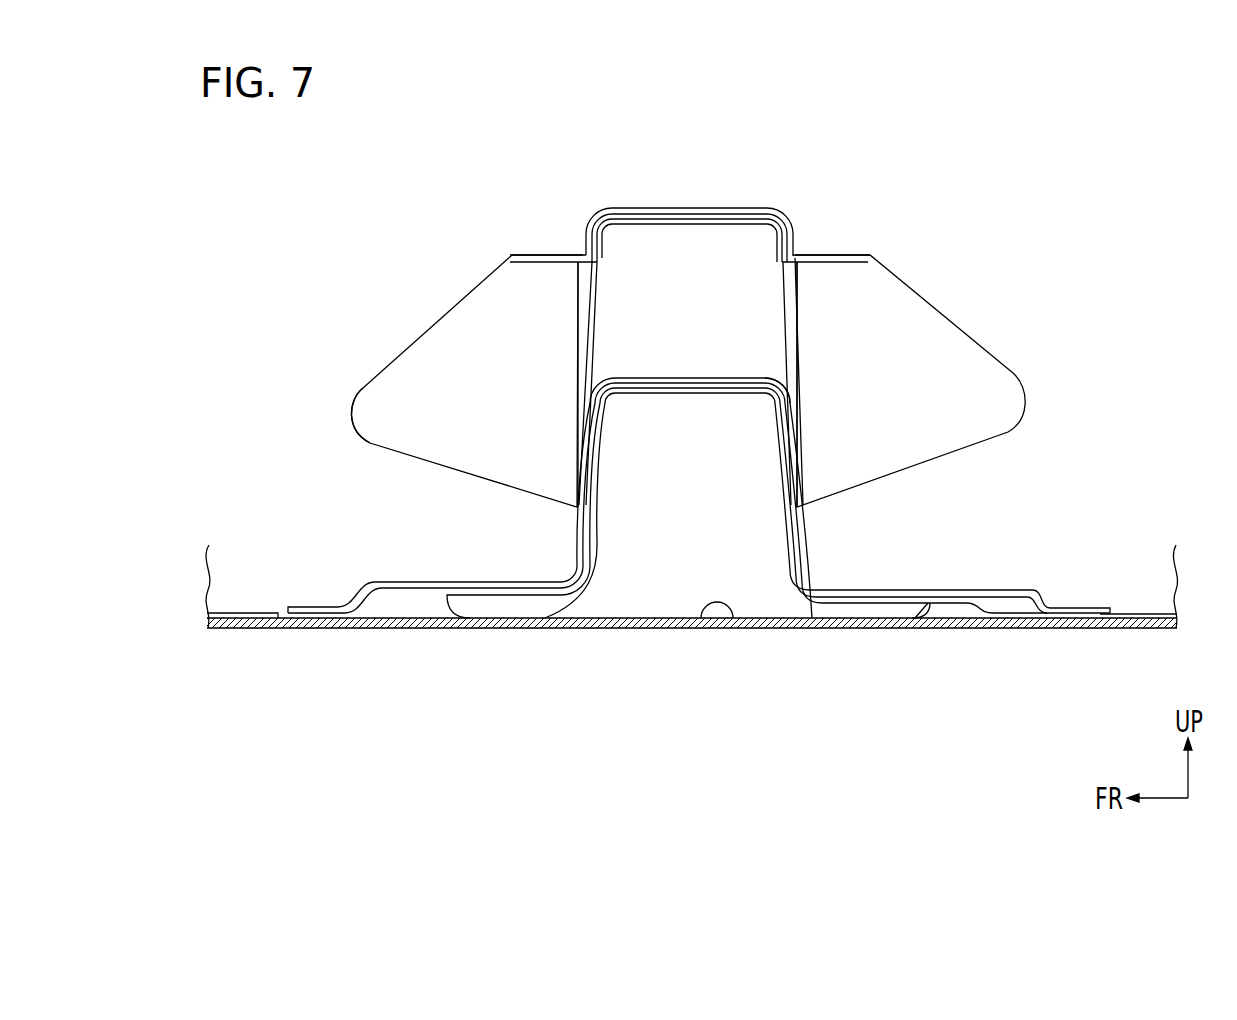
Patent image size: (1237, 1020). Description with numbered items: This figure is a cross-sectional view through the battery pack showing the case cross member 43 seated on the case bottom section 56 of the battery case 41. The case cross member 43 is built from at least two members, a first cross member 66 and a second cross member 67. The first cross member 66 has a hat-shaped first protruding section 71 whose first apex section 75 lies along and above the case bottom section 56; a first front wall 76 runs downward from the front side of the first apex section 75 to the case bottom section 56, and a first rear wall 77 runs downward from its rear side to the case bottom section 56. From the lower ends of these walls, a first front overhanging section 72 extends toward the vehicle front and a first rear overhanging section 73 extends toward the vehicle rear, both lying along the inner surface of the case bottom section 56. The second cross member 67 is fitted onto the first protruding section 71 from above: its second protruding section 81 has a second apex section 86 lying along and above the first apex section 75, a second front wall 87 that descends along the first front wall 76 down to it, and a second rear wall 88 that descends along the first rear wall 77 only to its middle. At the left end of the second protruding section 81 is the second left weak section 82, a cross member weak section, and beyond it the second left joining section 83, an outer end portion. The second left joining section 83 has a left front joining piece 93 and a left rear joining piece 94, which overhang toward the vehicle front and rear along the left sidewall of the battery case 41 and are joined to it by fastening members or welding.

The battery case 41 is at (600, 636).
The case cross member 43 is at (978, 150).
The case bottom section 56 is at (732, 622).
The first cross member 66 is at (790, 388).
The second cross member 67 is at (800, 215).
The first protruding section 71 is at (672, 375).
The first front overhanging section 72 is at (466, 586).
The first rear overhanging section 73 is at (947, 590).
The first apex section 75 is at (710, 382).
The first front wall 76 is at (577, 478).
The first rear wall 77 is at (797, 485).
The second protruding section 81 is at (742, 204).
The second left weak section 82 is at (600, 288).
The second left joining section 83 is at (436, 316).
The second apex section 86 is at (690, 207).
The second front wall 87 is at (580, 252).
The second rear wall 88 is at (796, 250).
The left front joining piece 93 is at (382, 411).
The left rear joining piece 94 is at (982, 398).